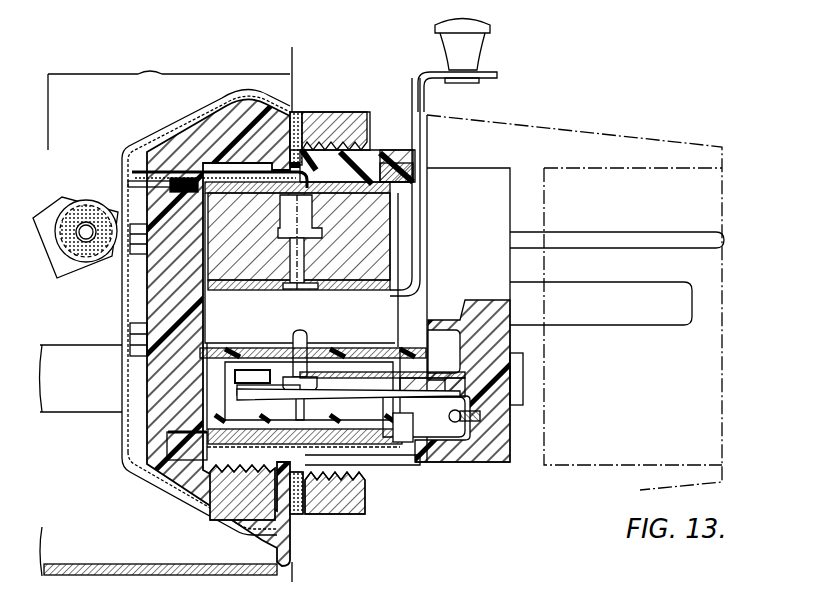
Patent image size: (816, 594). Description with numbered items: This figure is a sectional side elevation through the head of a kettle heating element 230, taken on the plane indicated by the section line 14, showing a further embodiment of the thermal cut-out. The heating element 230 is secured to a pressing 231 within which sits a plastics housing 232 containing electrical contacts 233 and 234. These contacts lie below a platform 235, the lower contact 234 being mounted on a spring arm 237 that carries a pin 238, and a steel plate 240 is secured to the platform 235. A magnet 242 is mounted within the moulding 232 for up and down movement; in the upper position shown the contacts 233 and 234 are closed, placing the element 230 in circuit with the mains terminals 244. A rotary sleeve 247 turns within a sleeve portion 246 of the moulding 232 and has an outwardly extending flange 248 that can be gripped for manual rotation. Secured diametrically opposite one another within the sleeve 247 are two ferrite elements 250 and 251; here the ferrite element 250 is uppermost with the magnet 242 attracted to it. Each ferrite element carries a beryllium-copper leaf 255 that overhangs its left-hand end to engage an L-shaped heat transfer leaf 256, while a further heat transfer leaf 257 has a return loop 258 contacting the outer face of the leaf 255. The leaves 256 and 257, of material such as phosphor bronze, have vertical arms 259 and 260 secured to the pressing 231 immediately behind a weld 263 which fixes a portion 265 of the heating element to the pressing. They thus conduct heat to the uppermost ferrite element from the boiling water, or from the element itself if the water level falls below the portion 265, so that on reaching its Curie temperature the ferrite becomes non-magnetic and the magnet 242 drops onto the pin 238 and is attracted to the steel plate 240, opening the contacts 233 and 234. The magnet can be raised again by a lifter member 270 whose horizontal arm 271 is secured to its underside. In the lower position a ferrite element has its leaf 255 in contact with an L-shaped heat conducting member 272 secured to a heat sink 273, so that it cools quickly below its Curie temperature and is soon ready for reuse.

The section line 14- 14 is at (292, 52).
The heating element 230 is at (78, 396).
The pressing 231 is at (123, 469).
The plastics housing 232 is at (247, 95).
The electrical contact 233 is at (243, 377).
The lower contact 234 is at (265, 390).
The platform 235 is at (335, 347).
The spring arm 237 is at (335, 396).
The pin 238 is at (300, 330).
The steel plate 240 is at (383, 347).
The magnet 242 is at (368, 222).
The mains terminals 244 is at (578, 320).
The sleeve portion 246 is at (327, 130).
The rotary sleeve 247 is at (387, 153).
The flange 248 is at (399, 157).
The ferrite element 250 is at (412, 167).
The ferrite element 251 is at (389, 458).
The beryllium-copper leaf 255 is at (178, 166).
The L-shaped heat transfer leaf 256 is at (125, 173).
The heat transfer leaf 257 is at (128, 157).
The return loop 258 is at (212, 163).
The vertical arm 259 is at (130, 313).
The vertical arm 260 is at (128, 262).
The weld 263 is at (120, 202).
The portion of the heating element 265 is at (68, 270).
The lifter member 270 is at (421, 221).
The horizontal arm 271 is at (340, 283).
The L-shaped heat conducting member 272 is at (217, 494).
The heat sink 273 is at (237, 477).